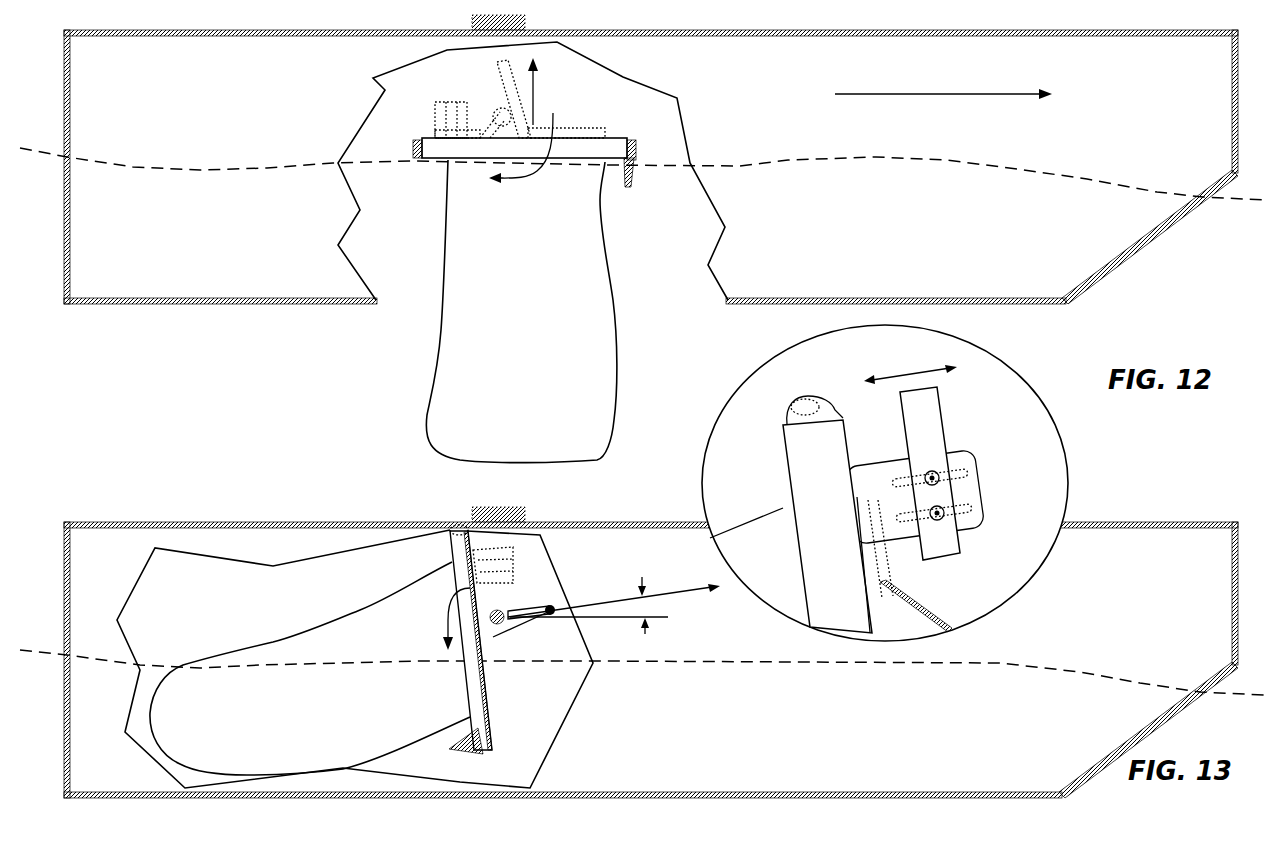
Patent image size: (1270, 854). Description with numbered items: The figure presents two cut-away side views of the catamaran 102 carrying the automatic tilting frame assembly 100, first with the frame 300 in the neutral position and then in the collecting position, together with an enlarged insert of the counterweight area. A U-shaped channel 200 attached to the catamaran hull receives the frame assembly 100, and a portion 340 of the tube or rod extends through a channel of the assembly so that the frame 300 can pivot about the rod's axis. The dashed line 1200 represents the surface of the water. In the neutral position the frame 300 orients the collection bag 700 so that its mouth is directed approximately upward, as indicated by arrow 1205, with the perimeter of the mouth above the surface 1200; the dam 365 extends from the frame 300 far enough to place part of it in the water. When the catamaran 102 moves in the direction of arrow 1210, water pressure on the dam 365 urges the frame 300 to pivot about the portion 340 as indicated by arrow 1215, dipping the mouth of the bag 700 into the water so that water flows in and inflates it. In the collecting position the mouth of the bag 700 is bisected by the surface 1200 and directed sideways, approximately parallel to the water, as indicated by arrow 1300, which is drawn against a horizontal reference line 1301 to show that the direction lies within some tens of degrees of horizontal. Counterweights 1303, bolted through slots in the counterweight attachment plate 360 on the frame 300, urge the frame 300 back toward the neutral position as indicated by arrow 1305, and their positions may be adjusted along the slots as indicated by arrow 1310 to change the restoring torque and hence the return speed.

In FIG. 12, the automatic tilting frame assembly 100 is at (424, 177).
In FIG. 13, the automatic tilting frame assembly 100 is at (415, 563).
In FIG. 12, the catamaran 102 is at (137, 305).
In FIG. 13, the catamaran 102 is at (156, 521).
In FIG. 12, the U-shaped channel 200 is at (483, 16).
In FIG. 13, the U-shaped channel 200 is at (483, 507).
In FIG. 12, the frame 300 is at (428, 138).
In FIG. 13, the frame 300 is at (491, 731).
In FIG. 12, the portion of the tube or rod 340 is at (497, 112).
In FIG. 12, the counterweight attachment plate 360 is at (446, 102).
In FIG. 13, the counterweight attachment plate 360 is at (514, 560).
In FIG. 12, the dam 365 is at (634, 178).
In FIG. 12, the collection bag 700 is at (427, 413).
In FIG. 13, the collection bag 700 is at (271, 642).
In FIG. 12, the surface of the water 1200 is at (1078, 178).
In FIG. 13, the surface of the water 1200 is at (1080, 672).
In FIG. 12, the arrow indicating upward direction 1205 is at (533, 100).
In FIG. 12, the arrow indicating direction of catamaran movement 1210 is at (882, 94).
In FIG. 12, the arrow indicating frame pivoting 1215 is at (521, 178).
In FIG. 13, the arrow indicating sideways direction 1300 is at (687, 592).
In FIG. 13, the horizontal reference 1301 is at (594, 638).
In FIG. 13, the counterweights 1303 is at (944, 429).
In FIG. 13, the arrow indicating return to neutral position 1305 is at (449, 624).
In FIG. 13, the arrow indicating counterweight adjustment 1310 is at (915, 374).